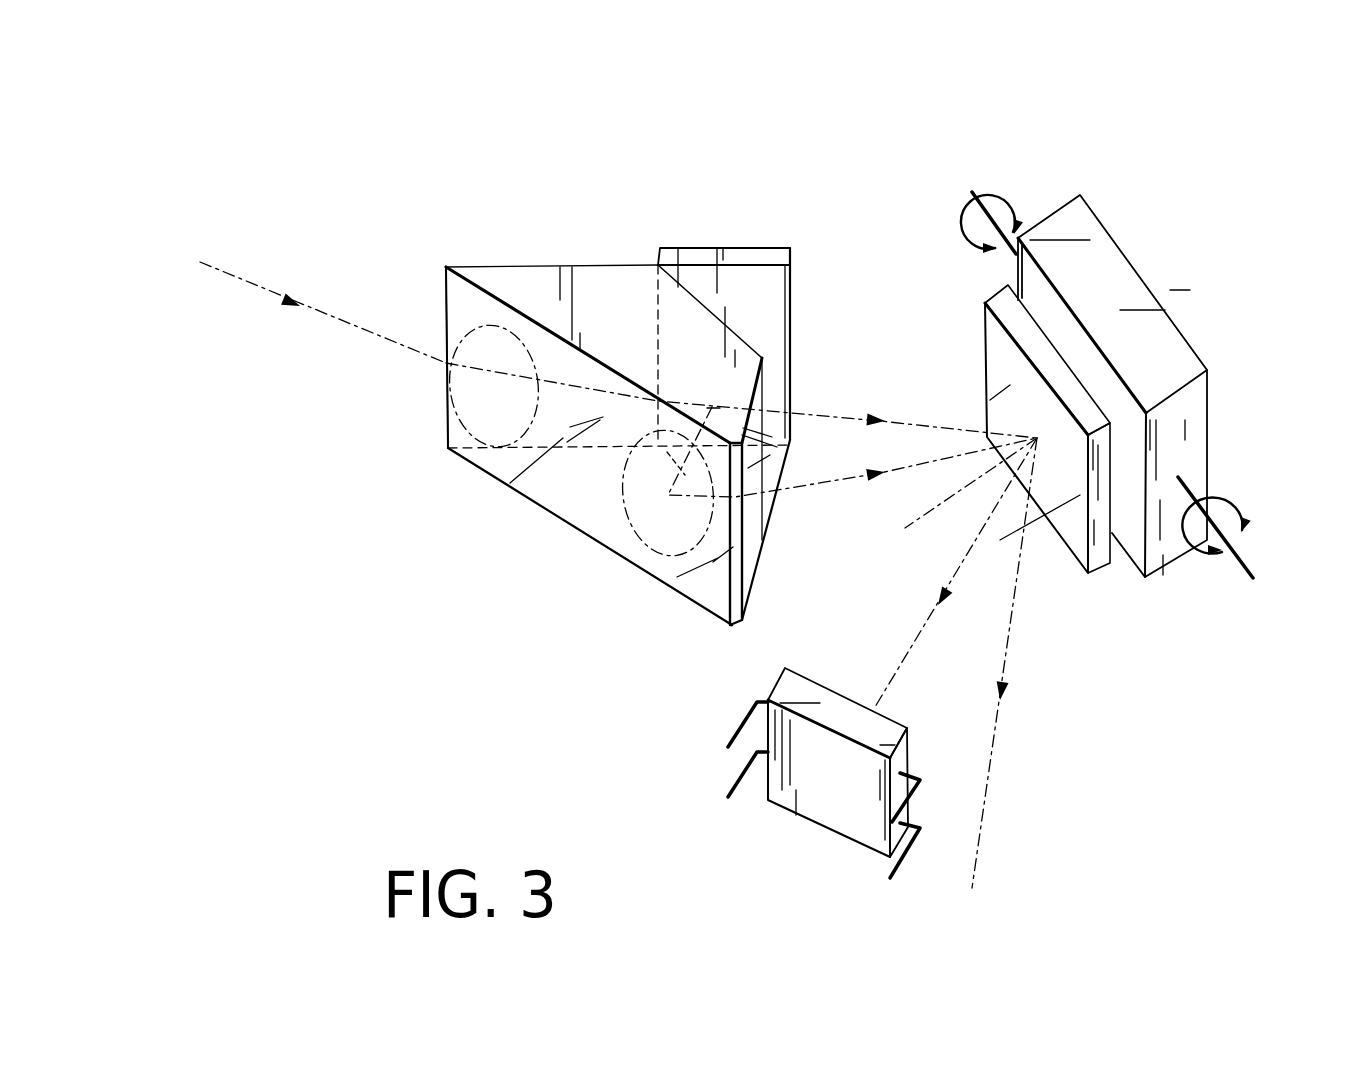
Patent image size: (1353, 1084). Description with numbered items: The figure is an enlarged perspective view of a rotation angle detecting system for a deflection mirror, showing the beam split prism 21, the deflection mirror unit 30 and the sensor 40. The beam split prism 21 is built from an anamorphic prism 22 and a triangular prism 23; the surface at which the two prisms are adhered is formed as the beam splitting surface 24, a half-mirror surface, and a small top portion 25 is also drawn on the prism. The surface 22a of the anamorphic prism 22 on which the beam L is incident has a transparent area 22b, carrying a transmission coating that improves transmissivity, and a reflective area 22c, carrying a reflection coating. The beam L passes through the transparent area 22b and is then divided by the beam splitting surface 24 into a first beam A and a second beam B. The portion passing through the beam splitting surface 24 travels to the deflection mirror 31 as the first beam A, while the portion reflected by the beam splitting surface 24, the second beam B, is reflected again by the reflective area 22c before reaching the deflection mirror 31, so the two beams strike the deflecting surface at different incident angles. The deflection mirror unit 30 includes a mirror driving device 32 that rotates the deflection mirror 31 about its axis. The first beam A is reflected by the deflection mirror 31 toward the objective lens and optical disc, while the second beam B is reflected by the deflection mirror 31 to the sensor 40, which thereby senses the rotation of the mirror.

The beam split prism 21 is at (583, 208).
The anamorphic prism 22 is at (532, 278).
The surface of the anamorphic prism 22a is at (563, 480).
The transparent area 22b is at (443, 410).
The reflective area 22c is at (663, 533).
The triangular prism 23 is at (753, 293).
The beam splitting surface 24 is at (697, 340).
The top prism portion 25 is at (742, 253).
The deflection mirror unit 30 is at (1130, 222).
The deflection mirror 31 is at (1027, 330).
The mirror driving device 32 is at (1150, 342).
The sensor 40 is at (840, 797).
The beam L is at (253, 278).
The first beam A is at (845, 410).
The second beam B is at (818, 492).